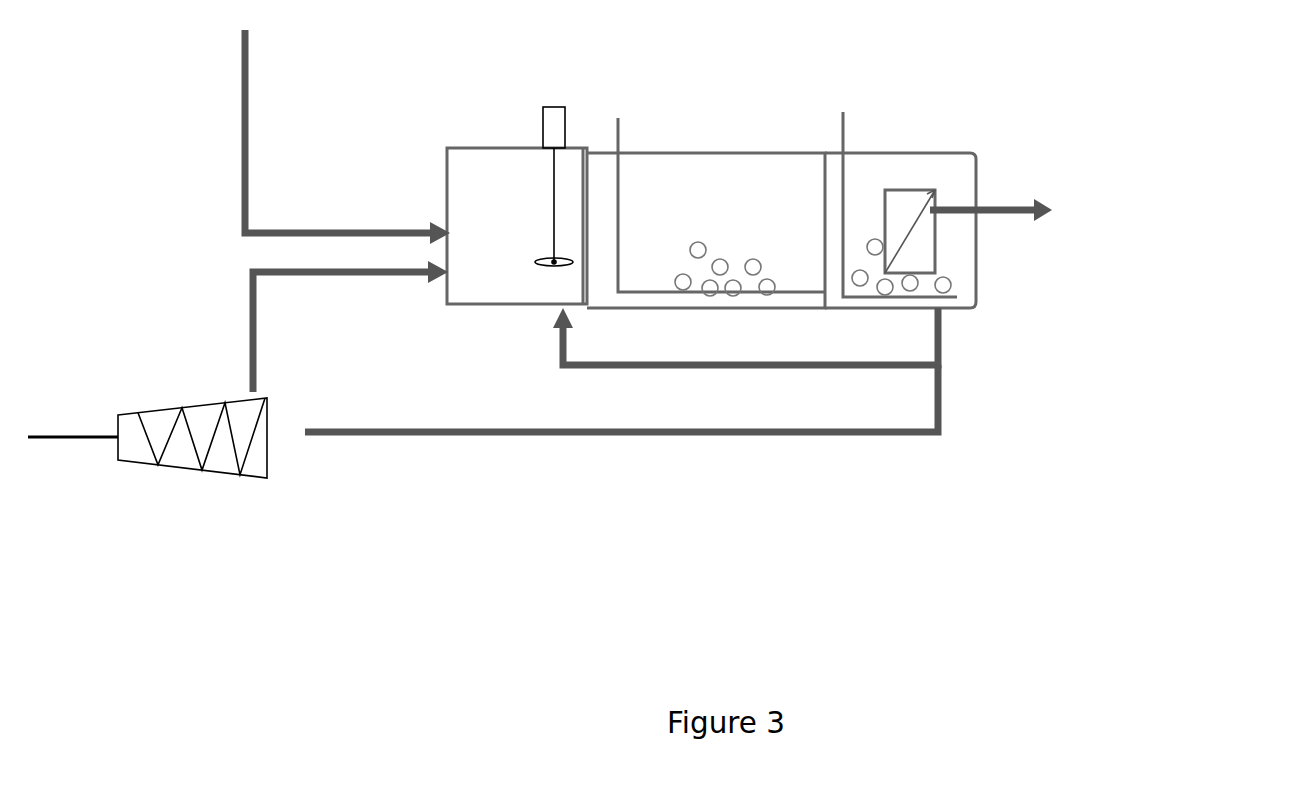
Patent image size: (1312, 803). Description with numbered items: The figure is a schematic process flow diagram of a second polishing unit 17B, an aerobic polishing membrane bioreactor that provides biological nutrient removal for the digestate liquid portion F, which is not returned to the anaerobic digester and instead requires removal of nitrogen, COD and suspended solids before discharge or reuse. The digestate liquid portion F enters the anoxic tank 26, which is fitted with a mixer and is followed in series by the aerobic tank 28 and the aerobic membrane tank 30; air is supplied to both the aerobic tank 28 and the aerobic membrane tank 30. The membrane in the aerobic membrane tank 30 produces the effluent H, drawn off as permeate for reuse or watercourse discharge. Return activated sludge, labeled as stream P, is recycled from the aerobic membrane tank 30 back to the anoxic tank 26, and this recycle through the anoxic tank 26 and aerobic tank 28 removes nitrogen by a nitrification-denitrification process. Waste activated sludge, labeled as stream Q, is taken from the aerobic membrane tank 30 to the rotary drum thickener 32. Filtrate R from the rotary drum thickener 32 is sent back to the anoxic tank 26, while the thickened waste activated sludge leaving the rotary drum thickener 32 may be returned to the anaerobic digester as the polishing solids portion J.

The anoxic tank 26 is at (473, 302).
The aerobic tank 28 is at (683, 152).
The aerobic membrane tank 30 is at (890, 152).
The rotary drum thickener 32 is at (145, 413).
The second polishing unit 17B is at (1095, 470).
The digestate liquid portion F is at (265, 230).
The filtrate R is at (253, 323).
The polishing solids portion J is at (60, 438).
The effluent H is at (995, 208).
The return activated sludge (RAS) stream P is at (745, 336).
The waste activated sludge (WAS) stream Q is at (621, 398).